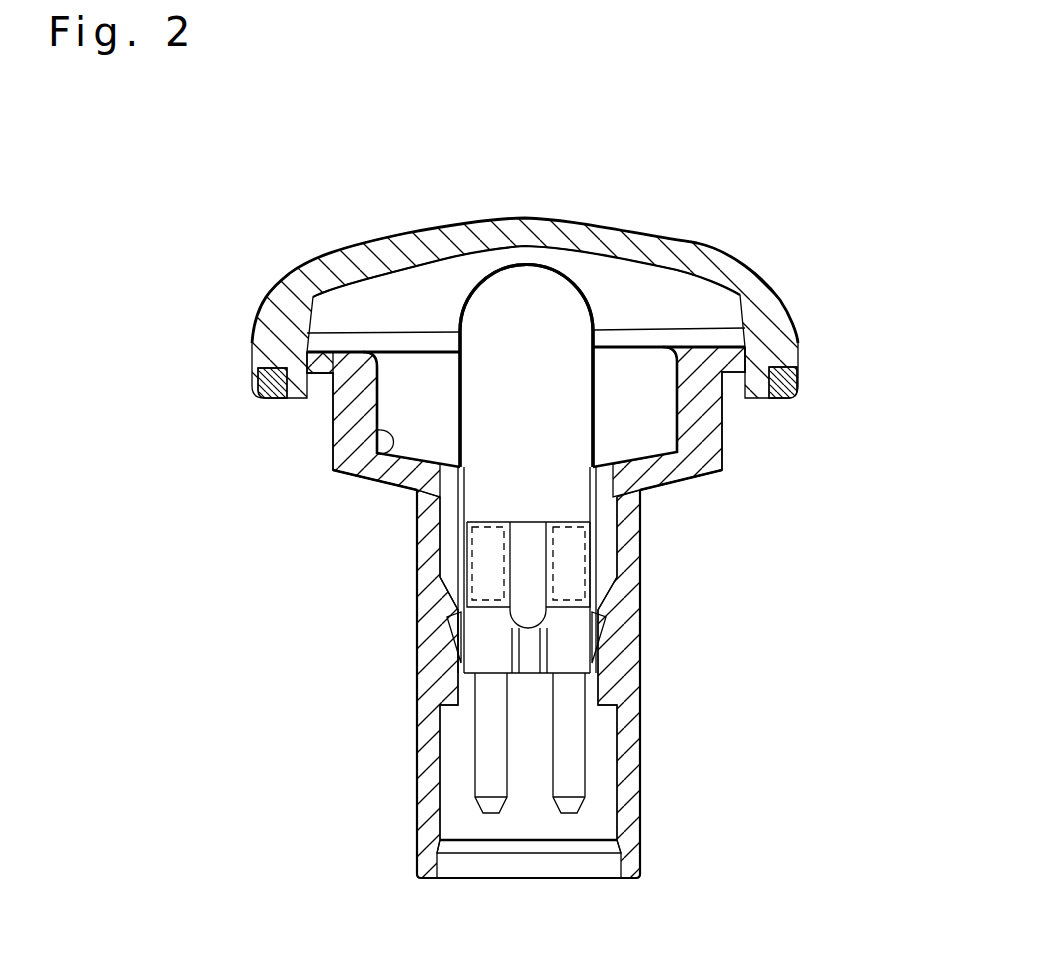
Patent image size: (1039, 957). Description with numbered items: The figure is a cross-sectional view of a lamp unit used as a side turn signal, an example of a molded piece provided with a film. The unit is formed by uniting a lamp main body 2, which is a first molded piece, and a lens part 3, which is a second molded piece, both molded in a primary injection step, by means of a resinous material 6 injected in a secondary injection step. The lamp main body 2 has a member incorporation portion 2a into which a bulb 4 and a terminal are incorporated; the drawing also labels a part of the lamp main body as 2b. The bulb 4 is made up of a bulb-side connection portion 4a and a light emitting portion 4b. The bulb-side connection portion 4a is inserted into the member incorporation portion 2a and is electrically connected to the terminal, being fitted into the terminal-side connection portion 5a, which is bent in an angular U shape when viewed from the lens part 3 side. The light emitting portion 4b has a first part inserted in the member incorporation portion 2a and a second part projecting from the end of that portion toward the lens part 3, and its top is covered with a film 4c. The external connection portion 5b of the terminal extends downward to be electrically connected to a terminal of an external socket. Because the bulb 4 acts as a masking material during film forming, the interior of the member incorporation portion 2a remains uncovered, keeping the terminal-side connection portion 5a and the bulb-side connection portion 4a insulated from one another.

The lamp main body 2 is at (347, 435).
The member incorporation portion 2a is at (627, 673).
The flange / engagement projection of holder 2b is at (395, 445).
The lens part 3 is at (606, 243).
The bulb 4 is at (476, 283).
The bulb-side connection portion 4a is at (570, 557).
The light emitting portion 4b is at (563, 383).
The film 4c is at (528, 267).
The terminal-side connection portion 5a is at (490, 627).
The external connection portion 5b is at (488, 768).
The resinous material 6 is at (798, 378).